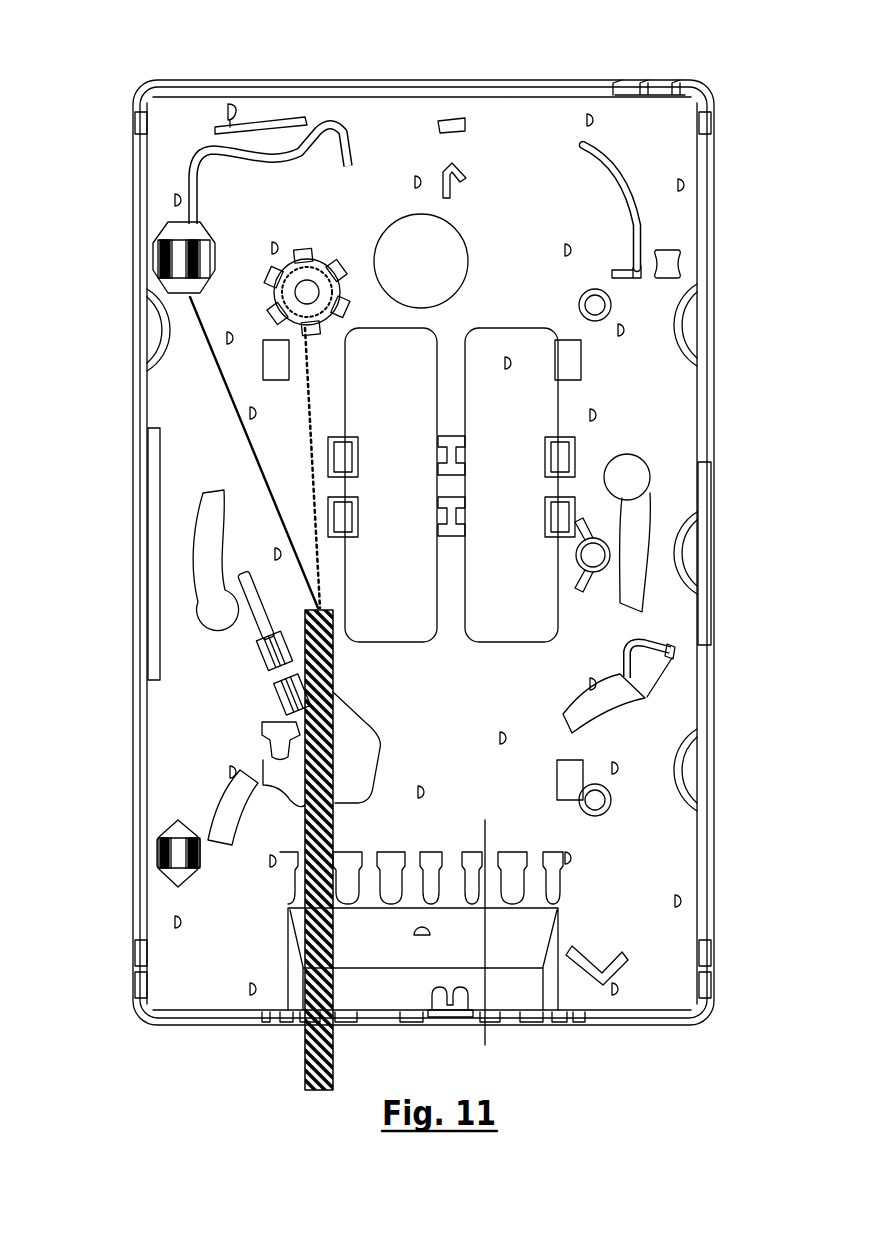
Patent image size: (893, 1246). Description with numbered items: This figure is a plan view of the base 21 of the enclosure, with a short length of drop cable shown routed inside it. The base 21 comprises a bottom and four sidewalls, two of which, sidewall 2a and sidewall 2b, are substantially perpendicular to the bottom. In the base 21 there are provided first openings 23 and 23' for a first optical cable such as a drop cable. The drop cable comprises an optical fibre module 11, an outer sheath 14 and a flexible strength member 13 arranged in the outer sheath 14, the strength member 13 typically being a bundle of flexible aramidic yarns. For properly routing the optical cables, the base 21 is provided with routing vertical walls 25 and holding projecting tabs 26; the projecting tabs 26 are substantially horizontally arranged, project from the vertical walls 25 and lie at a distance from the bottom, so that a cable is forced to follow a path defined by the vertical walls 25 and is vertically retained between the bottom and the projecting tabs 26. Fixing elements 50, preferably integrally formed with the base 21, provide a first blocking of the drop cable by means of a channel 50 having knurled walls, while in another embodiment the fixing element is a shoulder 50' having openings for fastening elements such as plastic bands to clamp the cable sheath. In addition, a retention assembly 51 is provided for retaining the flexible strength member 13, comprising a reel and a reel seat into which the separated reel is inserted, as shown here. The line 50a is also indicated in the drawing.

The base 21 is at (131, 83).
The sidewall 2b is at (556, 96).
The sidewall 2a is at (636, 1015).
The outer sheath 14 is at (190, 1032).
The projecting tabs 26 is at (345, 156).
The retention assembly 51 is at (294, 241).
The routing vertical walls 25 is at (604, 182).
The optical fibre module 11 is at (243, 432).
The flexible strength member 13 is at (306, 424).
The shoulder 50' is at (246, 706).
The first opening 23' is at (377, 747).
The fixing element 50 is at (399, 931).
The first opening 23 is at (283, 849).
The center line of support 50a is at (490, 949).